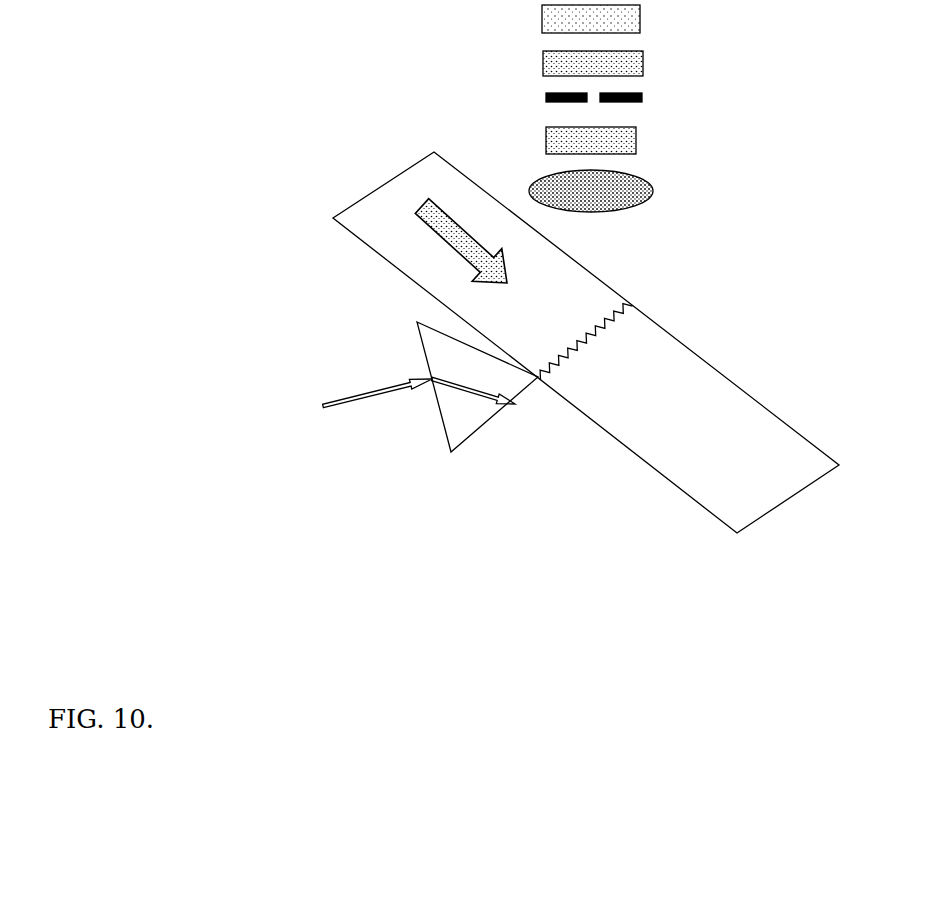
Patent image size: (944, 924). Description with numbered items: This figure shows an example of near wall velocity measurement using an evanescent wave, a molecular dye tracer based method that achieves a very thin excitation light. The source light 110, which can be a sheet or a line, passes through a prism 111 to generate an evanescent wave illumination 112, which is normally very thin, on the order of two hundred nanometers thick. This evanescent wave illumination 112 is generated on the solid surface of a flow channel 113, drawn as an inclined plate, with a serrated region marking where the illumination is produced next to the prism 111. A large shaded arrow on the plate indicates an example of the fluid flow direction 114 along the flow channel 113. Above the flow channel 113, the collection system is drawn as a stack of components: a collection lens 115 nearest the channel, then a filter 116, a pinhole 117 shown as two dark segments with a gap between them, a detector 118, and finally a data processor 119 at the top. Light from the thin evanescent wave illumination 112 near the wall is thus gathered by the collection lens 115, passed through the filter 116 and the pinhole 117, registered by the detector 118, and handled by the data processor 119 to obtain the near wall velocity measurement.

The source light 110 is at (360, 378).
The prism 111 is at (505, 427).
The evanescent wave illumination 112 is at (630, 327).
The flow channel 113 is at (788, 447).
The fluid flow direction 114 is at (413, 195).
The collection lens 115 is at (656, 197).
The filter 116 is at (648, 144).
The pinhole 117 is at (655, 100).
The detector 118 is at (657, 63).
The data processor 119 is at (527, 23).